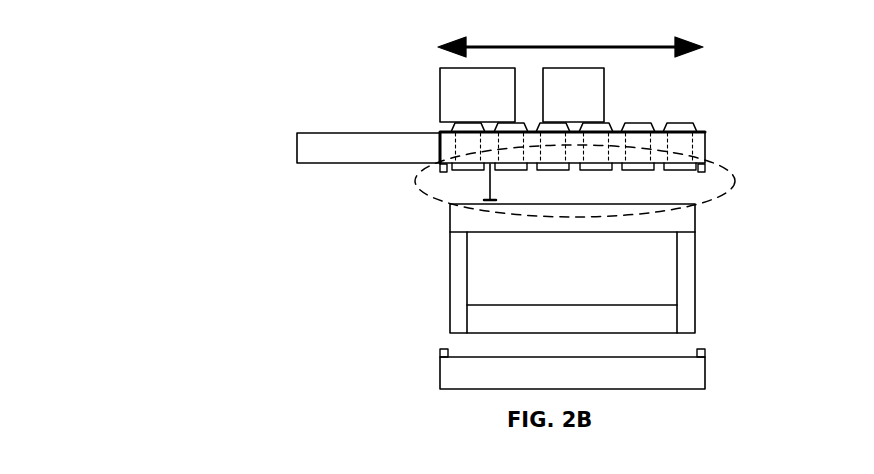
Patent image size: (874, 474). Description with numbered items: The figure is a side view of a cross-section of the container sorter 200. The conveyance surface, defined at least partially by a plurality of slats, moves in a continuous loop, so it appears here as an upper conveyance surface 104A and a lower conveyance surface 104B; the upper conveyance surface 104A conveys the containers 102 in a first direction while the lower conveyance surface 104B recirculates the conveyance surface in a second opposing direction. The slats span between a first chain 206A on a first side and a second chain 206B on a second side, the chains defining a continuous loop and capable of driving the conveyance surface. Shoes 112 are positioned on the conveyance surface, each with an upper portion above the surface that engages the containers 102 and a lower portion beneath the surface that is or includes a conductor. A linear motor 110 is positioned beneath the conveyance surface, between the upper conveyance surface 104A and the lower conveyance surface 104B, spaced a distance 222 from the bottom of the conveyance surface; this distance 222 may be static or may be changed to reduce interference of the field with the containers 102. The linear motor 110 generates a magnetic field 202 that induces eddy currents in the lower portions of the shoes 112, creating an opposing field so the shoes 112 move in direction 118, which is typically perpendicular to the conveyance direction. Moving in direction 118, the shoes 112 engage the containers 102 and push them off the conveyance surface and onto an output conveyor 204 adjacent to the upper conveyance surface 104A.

The container sorter 200 is at (247, 114).
The output conveyor 204 is at (297, 146).
The container 102 is at (522, 95).
The direction 118 is at (657, 43).
The shoe 112 is at (638, 122).
The upper conveyance surface 104A is at (705, 147).
The lower conveyance surface 104B is at (706, 373).
The first chain 206A is at (705, 168).
The second chain 206B is at (438, 168).
The magnetic field 202 is at (438, 197).
The distance 222 is at (488, 196).
The linear motor 110 is at (695, 222).